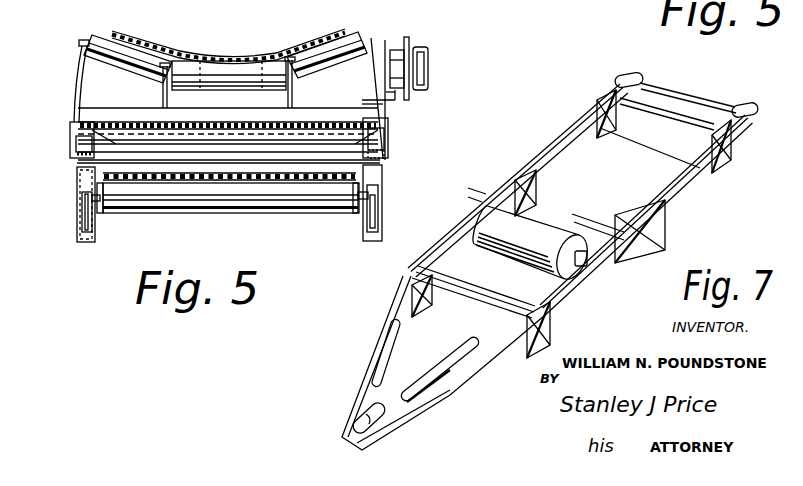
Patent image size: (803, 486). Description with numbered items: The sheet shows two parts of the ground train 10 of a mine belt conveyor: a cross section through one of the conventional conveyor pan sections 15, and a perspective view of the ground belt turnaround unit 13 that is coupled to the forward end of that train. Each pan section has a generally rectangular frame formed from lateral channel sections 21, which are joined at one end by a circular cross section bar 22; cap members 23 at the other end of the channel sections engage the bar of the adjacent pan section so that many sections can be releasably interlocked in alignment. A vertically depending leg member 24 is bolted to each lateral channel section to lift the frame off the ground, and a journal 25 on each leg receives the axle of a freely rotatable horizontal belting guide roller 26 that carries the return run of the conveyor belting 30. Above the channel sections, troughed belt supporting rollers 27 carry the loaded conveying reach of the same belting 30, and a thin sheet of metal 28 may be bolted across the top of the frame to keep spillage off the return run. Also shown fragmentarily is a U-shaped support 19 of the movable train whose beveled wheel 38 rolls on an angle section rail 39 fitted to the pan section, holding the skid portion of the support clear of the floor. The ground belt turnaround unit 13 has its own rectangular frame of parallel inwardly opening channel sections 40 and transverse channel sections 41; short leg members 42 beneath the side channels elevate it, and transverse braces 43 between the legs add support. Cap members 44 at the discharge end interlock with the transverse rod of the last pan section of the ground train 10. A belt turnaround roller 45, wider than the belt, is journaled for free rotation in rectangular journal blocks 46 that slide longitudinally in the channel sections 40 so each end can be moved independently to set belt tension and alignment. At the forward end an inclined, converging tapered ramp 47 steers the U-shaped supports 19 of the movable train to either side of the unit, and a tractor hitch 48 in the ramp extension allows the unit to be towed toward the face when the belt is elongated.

In FIG. 5, the ground train 10 is at (126, 252).
In FIG. 5, the conveyor pan sections 15 is at (347, 108).
In FIG. 5, the U-shaped support 19 is at (428, 67).
In FIG. 5, the lateral channel sections 21 is at (72, 152).
In FIG. 5, the circular cross section bar 22 is at (77, 168).
In FIG. 5, the cap members 23 is at (70, 137).
In FIG. 5, the leg member 24 is at (79, 208).
In FIG. 5, the journal 25 is at (85, 222).
In FIG. 5, the horizontal belting guide roller 26 is at (286, 216).
In FIG. 5, the troughed belt supporting rollers 27 is at (238, 68).
In FIG. 5, the thin sheet of metal 28 is at (100, 120).
In FIG. 5, the conveyor belting 30 is at (323, 40).
In FIG. 5, the beveled wheel 38 is at (409, 54).
In FIG. 5, the angle section rail 39 is at (396, 101).
In FIG. 7, the ground belt turnaround unit 13 is at (640, 296).
In FIG. 7, the channel sections 40 is at (570, 132).
In FIG. 7, the transverse channel sections 41 is at (670, 105).
In FIG. 7, the leg members 42 is at (525, 175).
In FIG. 7, the transverse braces 43 is at (540, 215).
In FIG. 7, the cap members 44 is at (622, 76).
In FIG. 7, the belt turnaround roller 45 is at (556, 236).
In FIG. 7, the journal blocks 46 is at (586, 264).
In FIG. 7, the tapered ramp 47 is at (363, 391).
In FIG. 7, the tractor hitch 48 is at (372, 415).